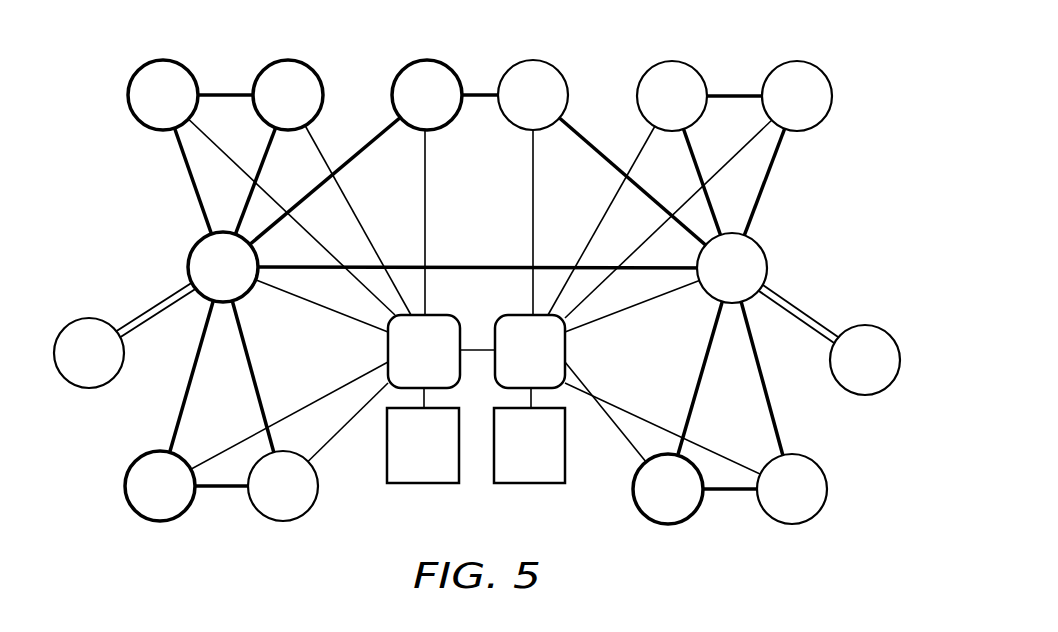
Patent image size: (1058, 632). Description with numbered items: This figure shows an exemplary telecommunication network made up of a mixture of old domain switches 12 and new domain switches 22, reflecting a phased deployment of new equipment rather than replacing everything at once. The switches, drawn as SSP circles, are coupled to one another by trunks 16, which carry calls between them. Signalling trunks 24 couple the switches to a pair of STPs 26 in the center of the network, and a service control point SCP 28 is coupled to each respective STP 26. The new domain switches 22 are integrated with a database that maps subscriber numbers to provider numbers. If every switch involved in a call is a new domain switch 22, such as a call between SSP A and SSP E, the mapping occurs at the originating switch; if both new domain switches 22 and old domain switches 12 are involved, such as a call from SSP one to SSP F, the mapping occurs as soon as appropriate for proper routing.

The old domain switch 12 is at (540, 60).
The trunk 16 is at (226, 95).
The new domain switch 22 is at (167, 60).
The signalling trunk 24 is at (270, 188).
The STP 26 is at (387, 350).
The SCP 28 is at (425, 485).